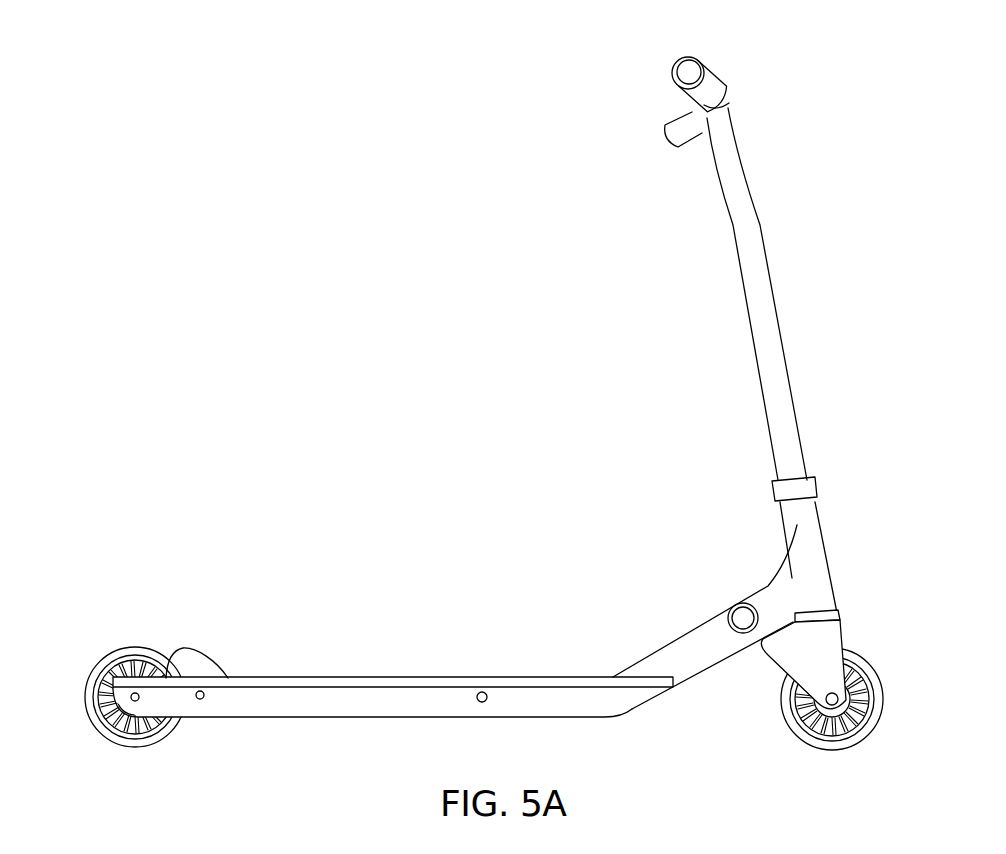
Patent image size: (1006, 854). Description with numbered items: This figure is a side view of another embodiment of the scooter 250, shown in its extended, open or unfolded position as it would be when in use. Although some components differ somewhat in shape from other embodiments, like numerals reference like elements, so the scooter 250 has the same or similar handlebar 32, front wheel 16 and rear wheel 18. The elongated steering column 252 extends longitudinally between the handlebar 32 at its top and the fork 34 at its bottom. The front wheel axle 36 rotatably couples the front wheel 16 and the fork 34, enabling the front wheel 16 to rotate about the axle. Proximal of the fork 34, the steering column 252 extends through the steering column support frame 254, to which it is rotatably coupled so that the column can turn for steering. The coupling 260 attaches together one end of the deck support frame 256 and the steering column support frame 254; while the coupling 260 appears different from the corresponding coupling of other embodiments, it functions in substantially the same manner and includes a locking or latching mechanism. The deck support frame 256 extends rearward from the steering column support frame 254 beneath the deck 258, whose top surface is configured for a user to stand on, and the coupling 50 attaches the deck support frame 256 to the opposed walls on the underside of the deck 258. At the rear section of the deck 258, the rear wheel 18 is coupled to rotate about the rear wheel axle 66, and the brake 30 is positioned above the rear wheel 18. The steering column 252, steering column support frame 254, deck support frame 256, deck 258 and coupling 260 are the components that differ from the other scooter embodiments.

The scooter 250 is at (893, 223).
The handlebar 32 is at (713, 66).
The steering column 252 is at (785, 357).
The steering column support frame 254 is at (823, 530).
The coupling 260 is at (743, 617).
The deck support frame 256 is at (653, 665).
The deck 258 is at (338, 648).
The coupling 50 is at (482, 692).
The brake 30 is at (188, 653).
The rear wheel axle 66 is at (133, 694).
The rear wheel 18 is at (125, 747).
The front wheel 16 is at (860, 743).
The front wheel axle 36 is at (840, 697).
The fork 34 is at (847, 627).